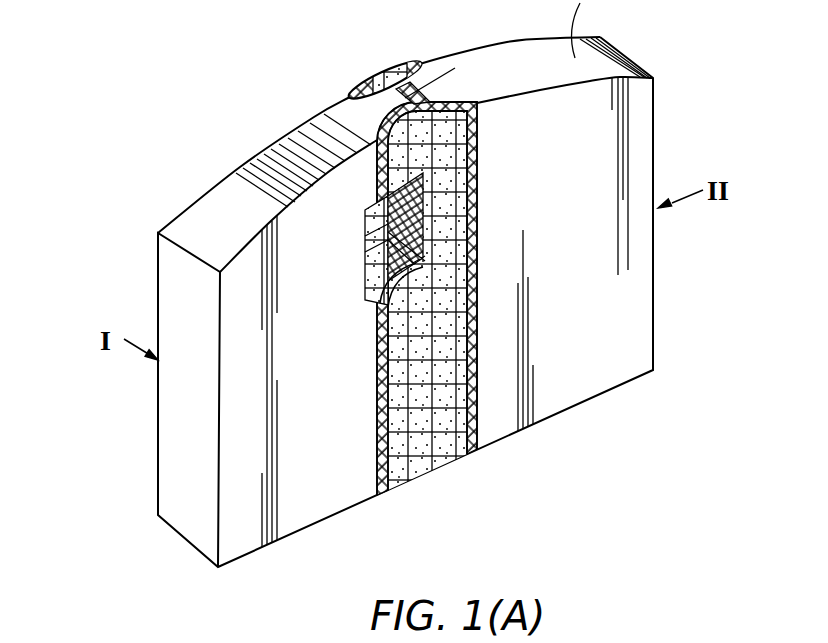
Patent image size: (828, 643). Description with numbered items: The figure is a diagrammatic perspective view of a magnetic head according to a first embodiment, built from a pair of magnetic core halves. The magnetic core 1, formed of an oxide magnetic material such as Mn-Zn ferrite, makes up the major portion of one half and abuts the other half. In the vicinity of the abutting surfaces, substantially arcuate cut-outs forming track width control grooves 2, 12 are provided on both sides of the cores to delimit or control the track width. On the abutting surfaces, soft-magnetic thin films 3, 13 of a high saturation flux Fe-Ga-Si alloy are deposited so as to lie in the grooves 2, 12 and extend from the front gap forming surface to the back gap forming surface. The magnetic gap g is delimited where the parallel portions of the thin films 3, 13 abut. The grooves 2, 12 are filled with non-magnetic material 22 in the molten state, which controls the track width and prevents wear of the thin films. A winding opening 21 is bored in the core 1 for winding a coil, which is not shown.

The magnetic core 1 is at (222, 197).
The track width control groove 2 is at (367, 90).
The soft-magnetic thin film 3 is at (350, 97).
The track width control groove 12 is at (410, 65).
The soft-magnetic thin film 13 is at (418, 63).
The winding opening 21 is at (370, 266).
The non-magnetic material 22 is at (385, 83).
The magnetic gap g is at (438, 79).